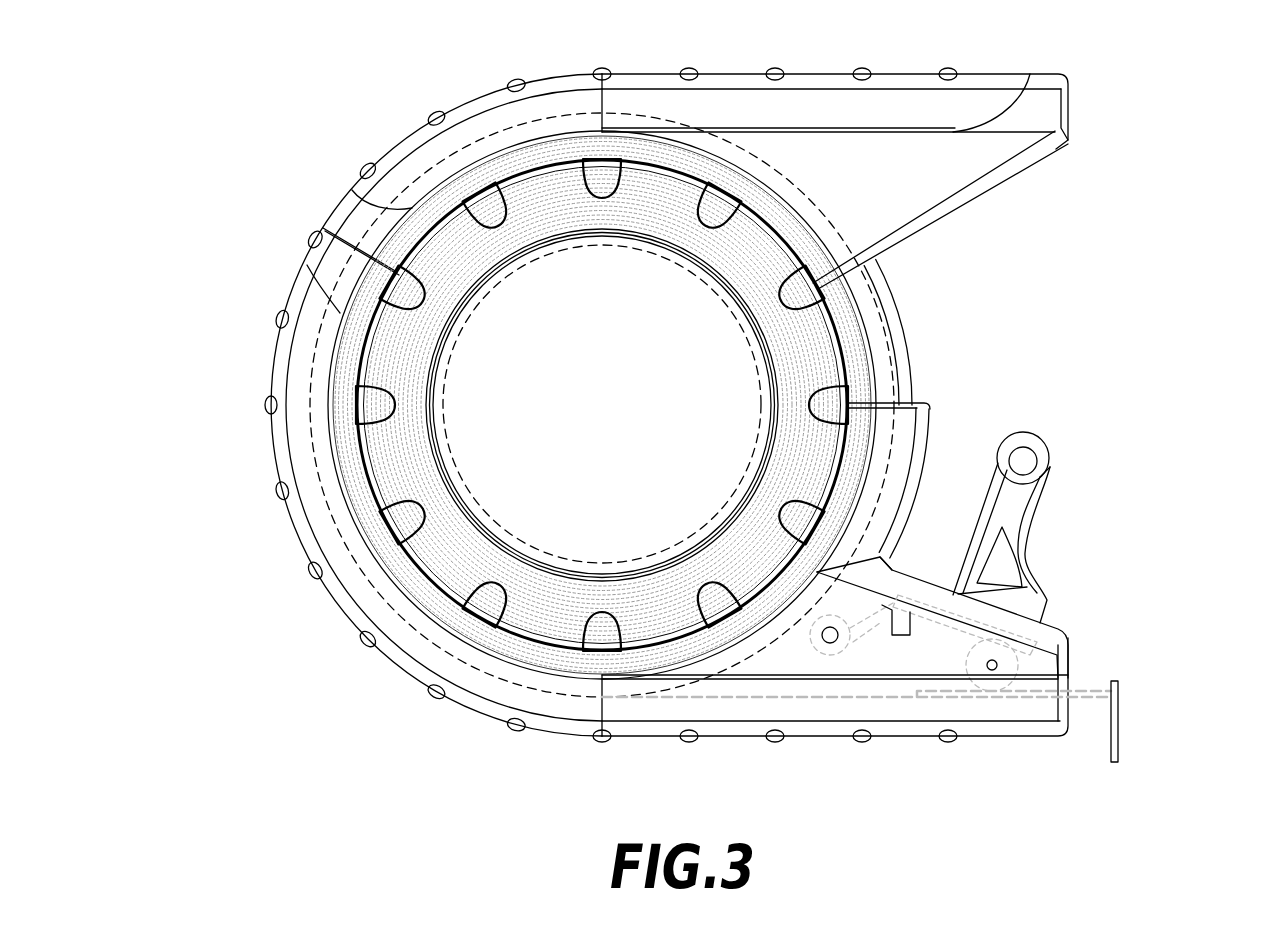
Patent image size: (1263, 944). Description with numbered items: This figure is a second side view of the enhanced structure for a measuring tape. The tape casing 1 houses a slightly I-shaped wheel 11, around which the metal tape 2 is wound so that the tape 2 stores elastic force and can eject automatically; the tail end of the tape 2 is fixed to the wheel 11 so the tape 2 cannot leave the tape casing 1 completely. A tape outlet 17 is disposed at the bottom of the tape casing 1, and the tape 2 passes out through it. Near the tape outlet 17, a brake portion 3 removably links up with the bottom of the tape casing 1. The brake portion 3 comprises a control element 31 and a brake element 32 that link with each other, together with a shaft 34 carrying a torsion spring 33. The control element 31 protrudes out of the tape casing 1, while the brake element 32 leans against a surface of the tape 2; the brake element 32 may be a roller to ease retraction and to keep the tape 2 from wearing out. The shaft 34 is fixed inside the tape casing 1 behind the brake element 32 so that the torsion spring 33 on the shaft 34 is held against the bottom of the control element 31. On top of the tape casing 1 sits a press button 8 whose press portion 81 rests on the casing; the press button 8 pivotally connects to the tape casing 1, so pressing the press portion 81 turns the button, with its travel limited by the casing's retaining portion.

The tape casing 1 is at (327, 202).
The press button 8 is at (408, 135).
The press portion 81 is at (1070, 104).
The wheel 11 is at (837, 225).
The control element 31 is at (1038, 432).
The brake portion 3 is at (1052, 575).
The brake element 32 is at (1068, 655).
The torsion spring 33 is at (853, 645).
The shaft 34 is at (832, 640).
The metal tape 2 is at (972, 702).
The tape outlet 17 is at (1073, 700).